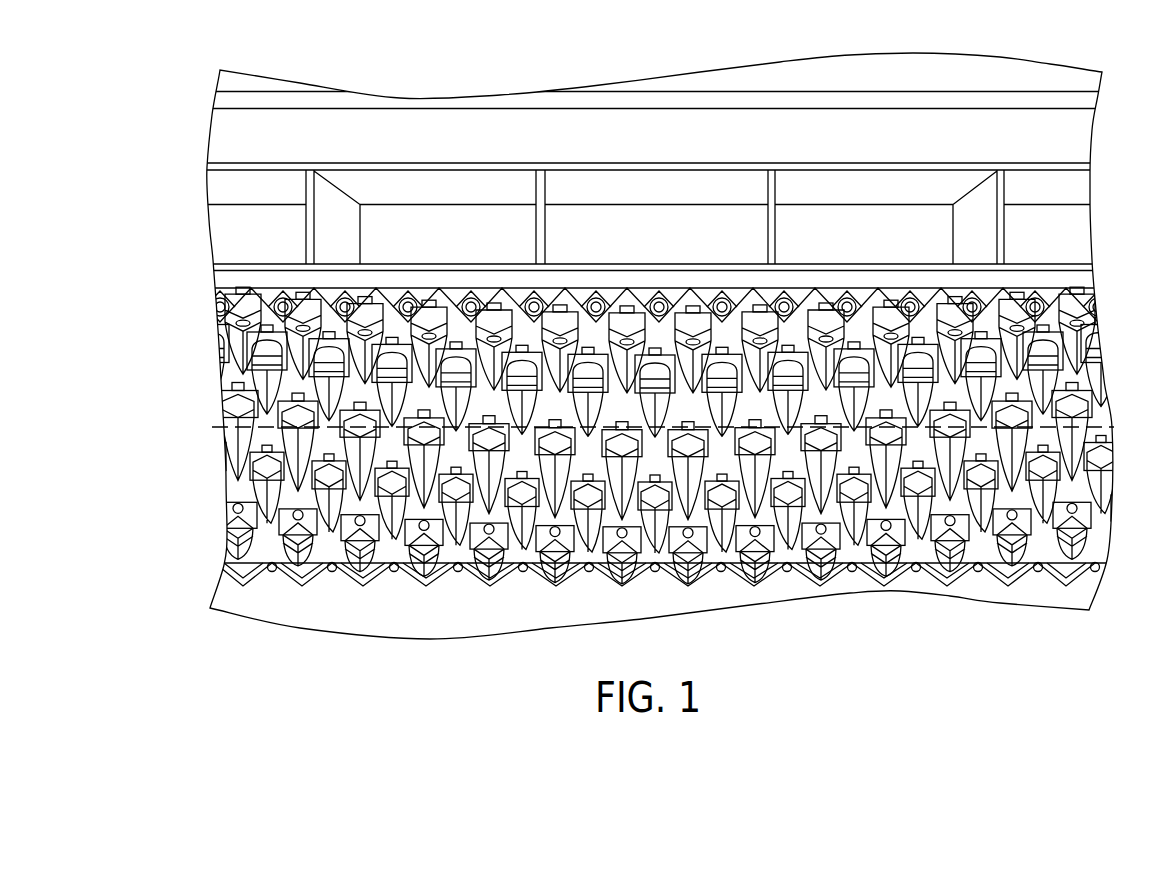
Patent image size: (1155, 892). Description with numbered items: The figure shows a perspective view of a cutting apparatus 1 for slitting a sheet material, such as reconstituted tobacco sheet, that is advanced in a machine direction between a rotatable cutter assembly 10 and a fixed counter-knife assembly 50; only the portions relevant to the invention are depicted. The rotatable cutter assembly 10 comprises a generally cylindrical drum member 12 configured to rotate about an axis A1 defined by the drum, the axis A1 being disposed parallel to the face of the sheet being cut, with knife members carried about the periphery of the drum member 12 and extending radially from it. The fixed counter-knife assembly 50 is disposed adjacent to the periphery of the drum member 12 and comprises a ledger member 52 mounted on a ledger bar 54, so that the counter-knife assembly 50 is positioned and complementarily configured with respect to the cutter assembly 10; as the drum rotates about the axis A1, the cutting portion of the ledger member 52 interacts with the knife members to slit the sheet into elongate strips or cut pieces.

The cutting apparatus 1 is at (136, 120).
The rotatable cutter assembly 10 is at (651, 402).
The drum member 12 is at (297, 375).
The fixed counter-knife assembly 50 is at (623, 181).
The ledger member 52 is at (382, 284).
The ledger bar 54 is at (873, 223).
The axis A1 is at (1116, 428).